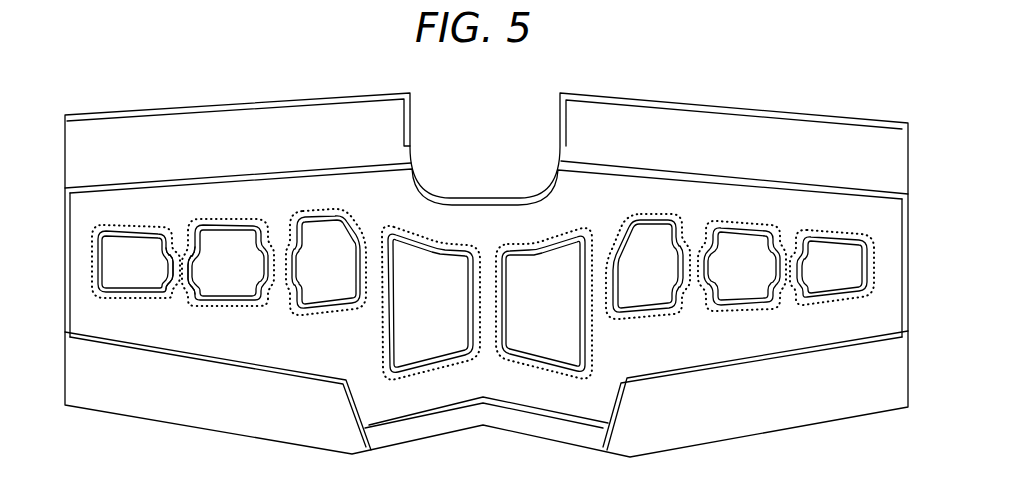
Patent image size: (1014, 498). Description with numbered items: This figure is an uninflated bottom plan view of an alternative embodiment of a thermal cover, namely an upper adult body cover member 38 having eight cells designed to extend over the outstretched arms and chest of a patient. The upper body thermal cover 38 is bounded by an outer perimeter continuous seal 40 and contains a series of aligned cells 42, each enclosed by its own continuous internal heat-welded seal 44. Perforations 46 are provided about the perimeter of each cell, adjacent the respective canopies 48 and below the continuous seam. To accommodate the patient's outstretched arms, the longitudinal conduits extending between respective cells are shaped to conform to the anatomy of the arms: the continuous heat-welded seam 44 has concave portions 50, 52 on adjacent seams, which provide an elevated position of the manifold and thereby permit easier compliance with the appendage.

The upper adult body cover member 38 is at (822, 72).
The outer perimeter continuous seal 40 is at (832, 185).
The aligned cells 42 is at (140, 223).
The continuous internal heat-welded seal 44 is at (253, 228).
The perforations 46 is at (237, 217).
The canopies 48 is at (330, 262).
The concave portion 50 is at (168, 267).
The concave portion 52 is at (194, 265).